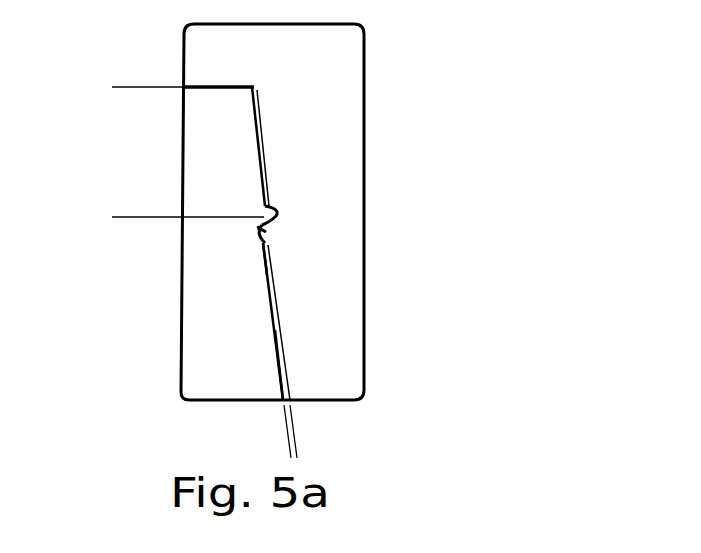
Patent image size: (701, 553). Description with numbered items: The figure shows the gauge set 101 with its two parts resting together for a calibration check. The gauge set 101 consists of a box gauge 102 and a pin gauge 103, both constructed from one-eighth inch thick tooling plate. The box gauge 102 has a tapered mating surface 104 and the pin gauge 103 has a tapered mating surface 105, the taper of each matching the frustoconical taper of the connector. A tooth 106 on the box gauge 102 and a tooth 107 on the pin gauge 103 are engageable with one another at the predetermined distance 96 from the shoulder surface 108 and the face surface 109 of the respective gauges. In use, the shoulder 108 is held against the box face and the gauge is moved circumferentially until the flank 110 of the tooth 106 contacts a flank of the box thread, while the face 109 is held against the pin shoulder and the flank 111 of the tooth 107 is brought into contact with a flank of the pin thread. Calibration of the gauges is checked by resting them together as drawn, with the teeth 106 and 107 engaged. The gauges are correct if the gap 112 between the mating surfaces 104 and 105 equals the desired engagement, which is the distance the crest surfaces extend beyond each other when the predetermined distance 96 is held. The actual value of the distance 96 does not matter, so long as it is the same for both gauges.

The gauge set 101 is at (397, 218).
The box gauge 102 is at (348, 148).
The pin gauge 103 is at (198, 342).
The tapered mating surface 104 is at (285, 335).
The tapered mating surface 105 is at (266, 272).
The tooth 106 is at (264, 230).
The tooth 107 is at (263, 212).
The shoulder surface 108 is at (207, 88).
The face surface 109 is at (218, 86).
The flank 110 is at (273, 207).
The flank 111 is at (256, 229).
The gap 112 is at (262, 432).
The predetermined distance 96 is at (127, 95).